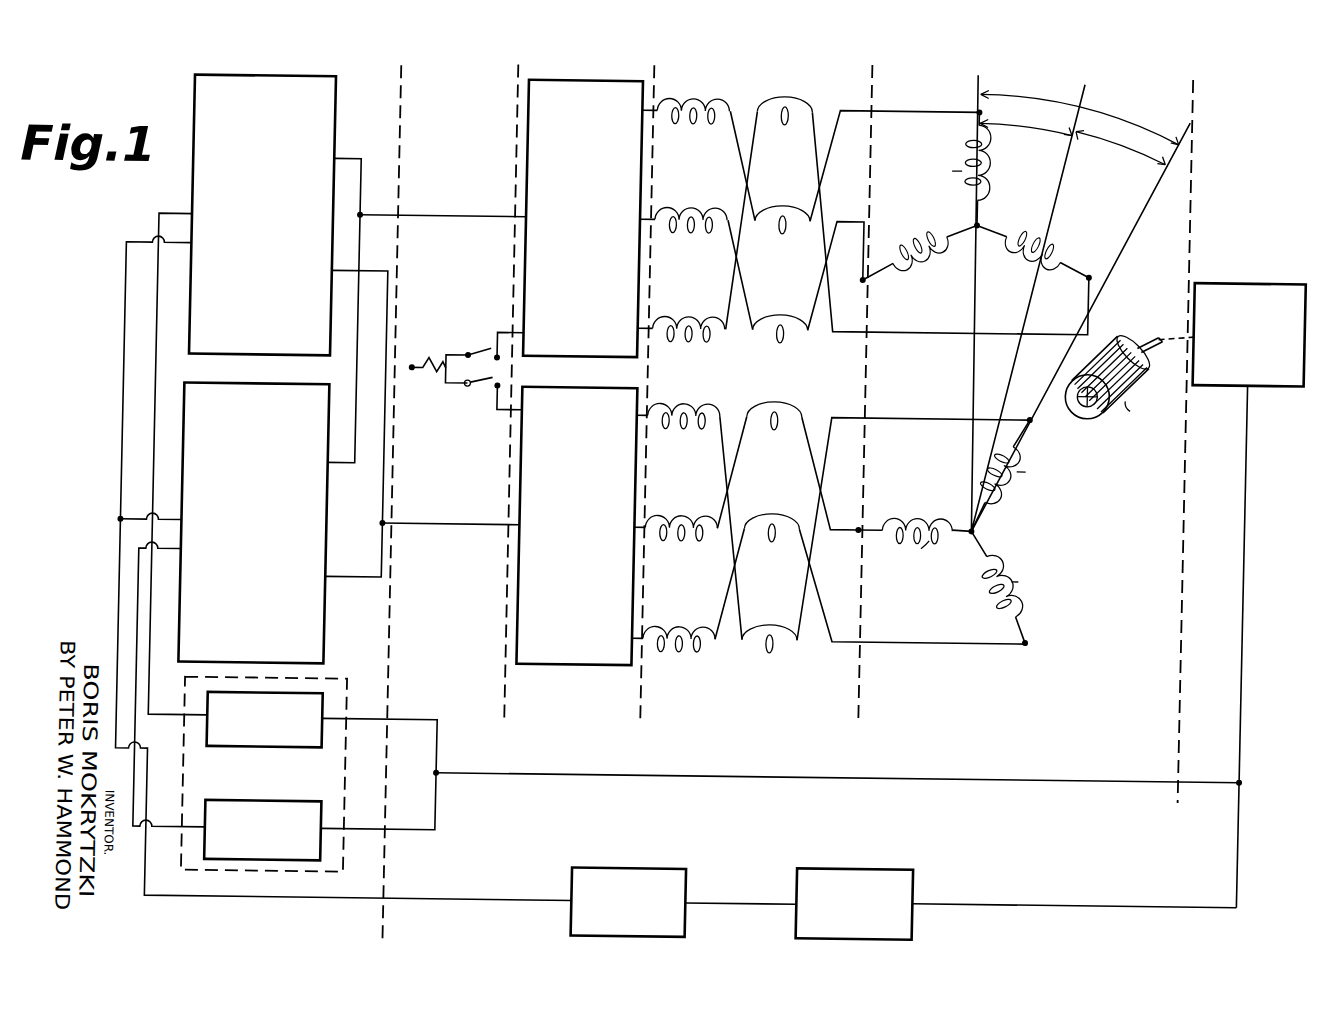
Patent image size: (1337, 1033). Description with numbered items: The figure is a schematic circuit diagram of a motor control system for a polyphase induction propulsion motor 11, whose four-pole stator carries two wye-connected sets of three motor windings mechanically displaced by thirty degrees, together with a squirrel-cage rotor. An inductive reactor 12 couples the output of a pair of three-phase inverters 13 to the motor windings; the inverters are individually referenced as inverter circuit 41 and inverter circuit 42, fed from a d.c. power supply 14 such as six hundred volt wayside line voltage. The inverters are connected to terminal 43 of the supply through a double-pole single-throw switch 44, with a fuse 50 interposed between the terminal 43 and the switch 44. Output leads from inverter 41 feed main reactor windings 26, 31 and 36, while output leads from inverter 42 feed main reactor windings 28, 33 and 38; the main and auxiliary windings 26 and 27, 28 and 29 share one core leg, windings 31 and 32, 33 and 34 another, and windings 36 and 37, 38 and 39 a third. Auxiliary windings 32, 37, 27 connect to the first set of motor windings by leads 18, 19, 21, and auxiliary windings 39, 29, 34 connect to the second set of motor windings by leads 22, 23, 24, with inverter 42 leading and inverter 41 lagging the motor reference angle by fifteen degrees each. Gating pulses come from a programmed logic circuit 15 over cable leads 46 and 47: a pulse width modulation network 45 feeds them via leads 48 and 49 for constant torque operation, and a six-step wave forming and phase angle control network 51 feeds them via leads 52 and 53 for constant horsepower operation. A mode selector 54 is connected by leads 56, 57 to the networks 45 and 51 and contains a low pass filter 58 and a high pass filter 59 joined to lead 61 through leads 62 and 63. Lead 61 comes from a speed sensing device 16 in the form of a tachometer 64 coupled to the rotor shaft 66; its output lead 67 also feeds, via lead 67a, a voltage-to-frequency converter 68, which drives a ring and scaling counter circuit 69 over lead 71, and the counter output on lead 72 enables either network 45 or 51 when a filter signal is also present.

The polyphase induction type propulsion motor 11 is at (989, 692).
The inductive reactor 12 is at (744, 691).
The pair of three-phase inverters 13 is at (584, 705).
The d.c. power supply 14 is at (459, 702).
The programmed logic circuit 15 is at (363, 645).
The speed sensing device 16 is at (1276, 769).
The lead 18 is at (886, 109).
The lead 19 is at (858, 233).
The lead 21 is at (886, 330).
The lead 22 is at (889, 416).
The lead 23 is at (832, 526).
The lead 24 is at (835, 638).
The main reactor winding 26 is at (696, 108).
The auxiliary reactor winding 27 is at (770, 108).
The main reactor winding 28 is at (700, 413).
The auxiliary reactor winding 29 is at (775, 413).
The main reactor winding 31 is at (698, 216).
The auxiliary reactor winding 32 is at (773, 218).
The main reactor winding 33 is at (691, 525).
The auxiliary reactor winding 34 is at (777, 525).
The main reactor winding 36 is at (692, 328).
The auxiliary reactor winding 37 is at (775, 328).
The main reactor winding 38 is at (692, 638).
The auxiliary reactor winding 39 is at (780, 638).
The inverter circuit 41 is at (564, 129).
The inverter circuit 42 is at (565, 427).
The terminal 43 is at (422, 374).
The double-pole single-throw switch 44 is at (482, 341).
The pulse width modulation network 45 is at (239, 136).
The cable lead 46 is at (449, 219).
The cable lead 47 is at (453, 527).
The lead 48 is at (350, 163).
The lead 49 is at (375, 275).
The fuse 50 is at (458, 388).
The six-step wave forming and phase angle control network 51 is at (244, 441).
The lead 52 is at (348, 467).
The lead 53 is at (355, 581).
The mode selector 54 is at (341, 683).
The lead 56 is at (170, 721).
The lead 57 is at (173, 833).
The low pass filter 58 is at (327, 752).
The high pass filter 59 is at (328, 810).
The lead 61 is at (927, 776).
The lead 62 is at (413, 723).
The lead 63 is at (419, 829).
The tachometer 64 is at (1240, 277).
The shaft 66 is at (1145, 342).
The output lead 67 is at (1245, 483).
The lead 67a is at (1010, 901).
The voltage-to-frequency converter 68 is at (897, 867).
The ring and scaling counter circuit 69 is at (672, 869).
The lead 71 is at (749, 903).
The lead 72 is at (520, 902).